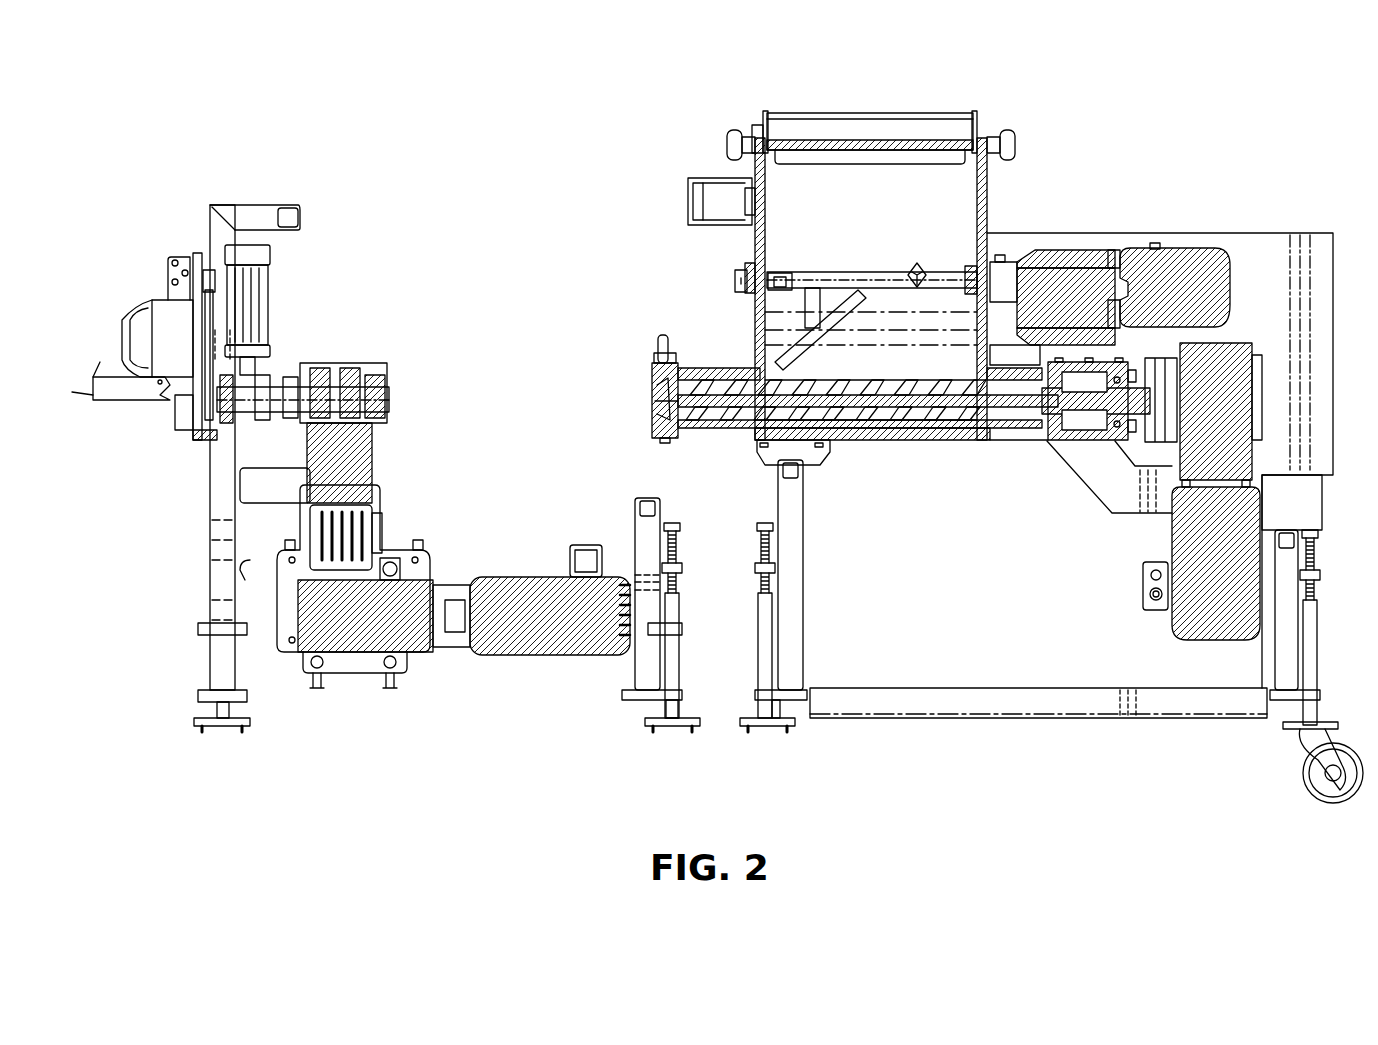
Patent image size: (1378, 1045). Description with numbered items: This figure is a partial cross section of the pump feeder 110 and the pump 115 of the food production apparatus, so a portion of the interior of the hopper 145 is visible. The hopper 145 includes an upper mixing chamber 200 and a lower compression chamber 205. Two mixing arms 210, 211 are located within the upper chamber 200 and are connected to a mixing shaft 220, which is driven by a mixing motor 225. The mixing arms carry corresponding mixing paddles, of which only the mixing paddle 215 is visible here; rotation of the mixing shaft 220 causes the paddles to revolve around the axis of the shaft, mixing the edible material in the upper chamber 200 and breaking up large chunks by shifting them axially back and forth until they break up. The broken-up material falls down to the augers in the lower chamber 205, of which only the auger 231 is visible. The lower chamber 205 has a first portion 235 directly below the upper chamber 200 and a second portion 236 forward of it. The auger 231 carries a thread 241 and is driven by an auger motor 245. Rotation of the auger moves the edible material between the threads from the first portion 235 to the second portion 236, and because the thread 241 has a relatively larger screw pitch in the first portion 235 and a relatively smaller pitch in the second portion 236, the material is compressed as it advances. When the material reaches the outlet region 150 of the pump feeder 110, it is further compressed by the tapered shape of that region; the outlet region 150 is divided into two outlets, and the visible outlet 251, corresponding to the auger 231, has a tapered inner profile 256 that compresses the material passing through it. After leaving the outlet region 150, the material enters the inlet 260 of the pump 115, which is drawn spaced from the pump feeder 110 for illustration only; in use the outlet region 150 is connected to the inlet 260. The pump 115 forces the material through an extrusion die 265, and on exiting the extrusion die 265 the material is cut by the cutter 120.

The pump feeder 110 is at (853, 108).
The hopper 145 is at (960, 192).
The mixing shaft 220 is at (858, 283).
The mixing paddle 215 is at (846, 306).
The mixing arm 210 is at (778, 272).
The mixing arm 211 is at (915, 262).
The upper mixing chamber 200 is at (775, 320).
The lower compression chamber 205 is at (735, 380).
The auger 231 is at (905, 418).
The first portion 235 is at (843, 422).
The thread 241 is at (890, 385).
The second portion 236 is at (720, 428).
The outlet region 150 is at (650, 360).
The tapered inner profile 256 is at (656, 406).
The outlet 251 is at (656, 412).
The mixing motor 225 is at (1152, 258).
The auger motor 245 is at (1232, 370).
The cutter 120 is at (170, 318).
The extrusion die 265 is at (183, 413).
The inlet 260 is at (390, 400).
The pump 115 is at (343, 343).